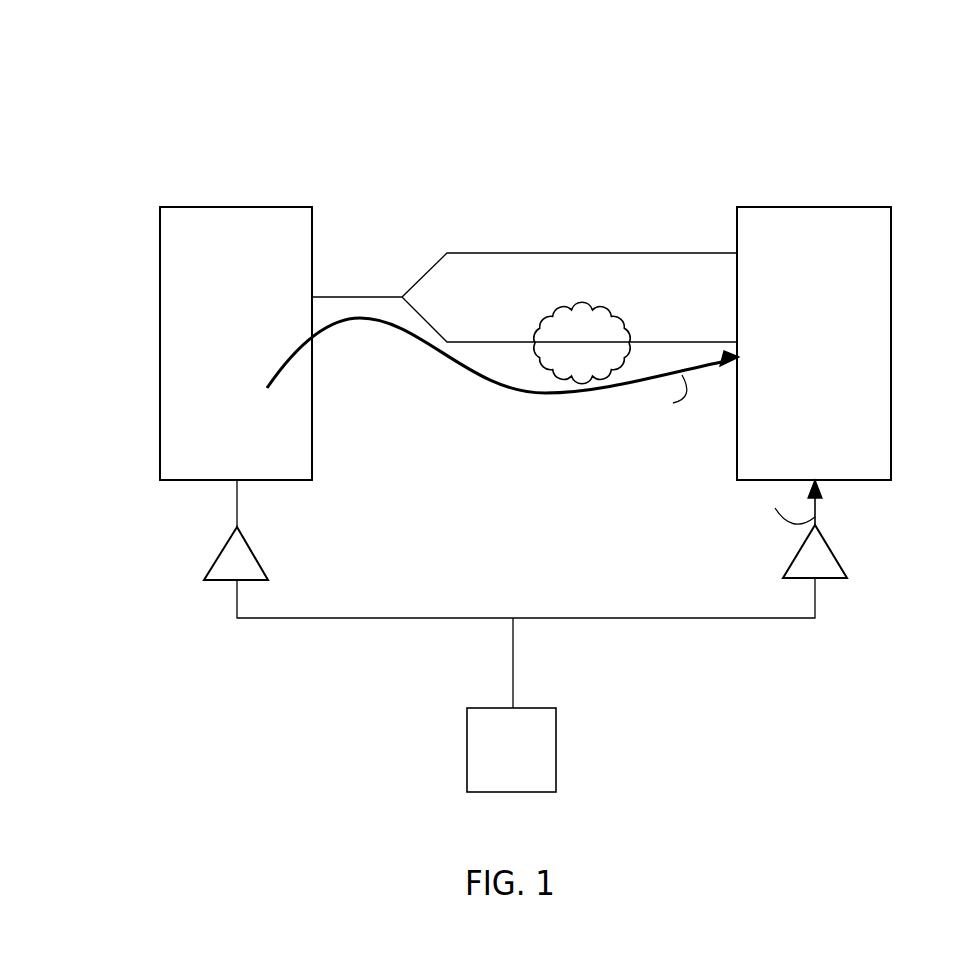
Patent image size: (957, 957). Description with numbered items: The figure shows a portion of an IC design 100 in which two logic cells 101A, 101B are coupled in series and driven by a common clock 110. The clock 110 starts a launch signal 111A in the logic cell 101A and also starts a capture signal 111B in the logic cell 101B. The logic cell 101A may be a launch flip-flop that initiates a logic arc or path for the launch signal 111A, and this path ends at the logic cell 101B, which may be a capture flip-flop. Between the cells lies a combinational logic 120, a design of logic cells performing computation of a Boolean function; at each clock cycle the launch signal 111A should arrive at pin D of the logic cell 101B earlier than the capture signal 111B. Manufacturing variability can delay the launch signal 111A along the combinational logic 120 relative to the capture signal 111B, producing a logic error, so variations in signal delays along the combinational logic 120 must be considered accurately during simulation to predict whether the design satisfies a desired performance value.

The IC design 100 is at (185, 78).
The logic cell 101A is at (275, 460).
The logic cell 101B is at (855, 458).
The clock 110 is at (540, 767).
The launch signal 111A is at (467, 373).
The capture signal 111B is at (817, 505).
The combinational logic 120 is at (613, 360).